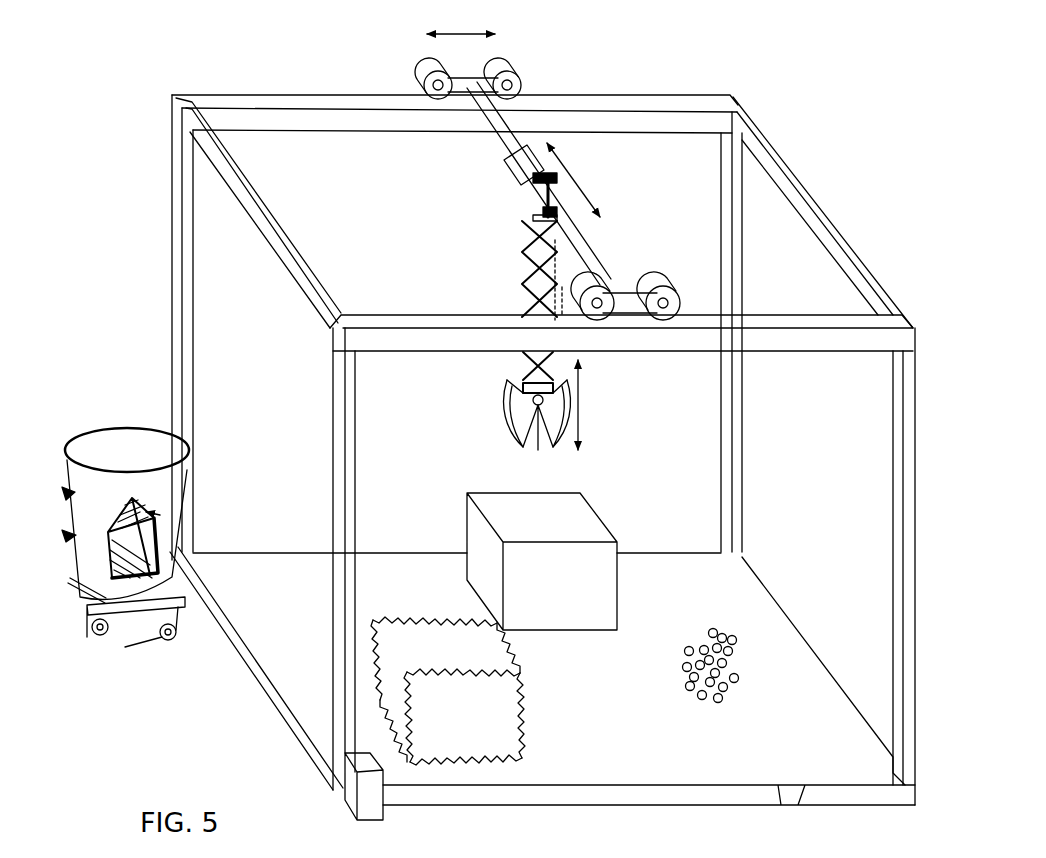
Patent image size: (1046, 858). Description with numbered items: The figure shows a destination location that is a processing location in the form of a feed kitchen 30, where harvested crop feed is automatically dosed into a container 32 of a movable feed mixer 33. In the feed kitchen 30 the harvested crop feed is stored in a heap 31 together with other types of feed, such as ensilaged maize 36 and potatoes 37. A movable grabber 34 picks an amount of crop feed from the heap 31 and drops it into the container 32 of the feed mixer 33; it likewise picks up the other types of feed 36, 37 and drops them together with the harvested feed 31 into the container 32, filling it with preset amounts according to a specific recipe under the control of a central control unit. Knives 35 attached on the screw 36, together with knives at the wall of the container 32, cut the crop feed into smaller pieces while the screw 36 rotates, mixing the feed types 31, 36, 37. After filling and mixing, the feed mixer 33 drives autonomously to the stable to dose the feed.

The feed kitchen 30 is at (354, 44).
The heap 31 is at (448, 691).
The container 32 is at (92, 447).
The feed mixer 33 is at (26, 492).
The movable grabber 34 is at (507, 203).
The knives 35 is at (66, 512).
The screw 36 is at (134, 497).
The potatoes 37 is at (727, 666).